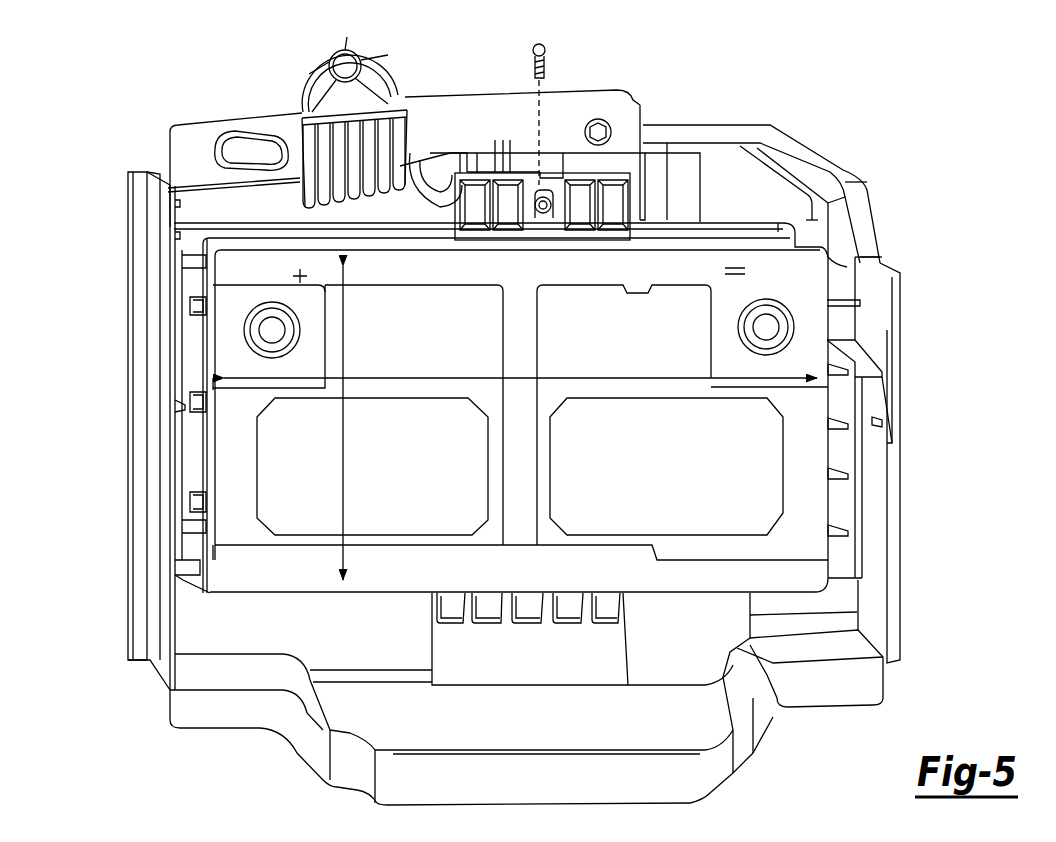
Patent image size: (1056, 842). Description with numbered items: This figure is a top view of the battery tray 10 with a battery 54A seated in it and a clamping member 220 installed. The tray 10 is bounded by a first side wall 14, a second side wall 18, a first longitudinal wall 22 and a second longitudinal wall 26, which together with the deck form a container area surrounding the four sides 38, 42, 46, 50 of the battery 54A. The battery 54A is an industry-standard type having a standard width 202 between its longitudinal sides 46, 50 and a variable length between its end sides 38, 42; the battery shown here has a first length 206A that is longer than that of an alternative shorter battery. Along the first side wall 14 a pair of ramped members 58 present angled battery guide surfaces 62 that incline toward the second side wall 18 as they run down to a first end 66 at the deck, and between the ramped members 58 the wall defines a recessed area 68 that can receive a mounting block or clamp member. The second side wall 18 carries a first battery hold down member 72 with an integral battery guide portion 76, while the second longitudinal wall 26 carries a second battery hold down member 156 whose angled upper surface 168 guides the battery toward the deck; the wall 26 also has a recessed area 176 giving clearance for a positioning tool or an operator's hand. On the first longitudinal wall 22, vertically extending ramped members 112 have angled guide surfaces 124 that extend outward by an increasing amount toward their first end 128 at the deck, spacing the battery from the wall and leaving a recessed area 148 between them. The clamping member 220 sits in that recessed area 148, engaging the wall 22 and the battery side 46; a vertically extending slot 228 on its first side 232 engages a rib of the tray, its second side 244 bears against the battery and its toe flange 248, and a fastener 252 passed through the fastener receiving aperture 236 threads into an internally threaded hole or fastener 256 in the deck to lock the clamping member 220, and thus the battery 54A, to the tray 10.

The battery tray 10 is at (872, 66).
The first side wall 14 is at (160, 192).
The second side wall 18 is at (860, 352).
The first longitudinal wall 22 is at (718, 155).
The second longitudinal wall 26 is at (740, 688).
The side of battery 38 is at (215, 462).
The side of battery 42 is at (828, 432).
The longitudinal side of battery 46 is at (521, 268).
The longitudinal side of battery 50 is at (405, 590).
The battery 54A is at (442, 366).
The ramped members 58 is at (176, 289).
The angled battery guide surface 62 is at (177, 250).
The first end 66 is at (200, 260).
The recessed area 68 is at (178, 420).
The first battery hold down member 72 is at (835, 332).
The battery guide portion 76 is at (845, 432).
The ramped members 112 is at (282, 203).
The angled battery guide surface 124 is at (256, 225).
The first end 128 is at (368, 258).
The recessed area 148 is at (597, 162).
The second battery hold down member 156 is at (630, 645).
The angled upper surface 168 is at (540, 672).
The recessed area 176 is at (395, 714).
The width 202 is at (347, 425).
The first length 206A is at (553, 375).
The clamping member 220 is at (640, 196).
The vertically extending slot 228 is at (570, 178).
The first side 232 is at (520, 172).
The fastener receiving aperture 236 is at (546, 214).
The second side 244 is at (481, 265).
The toe flange 248 is at (778, 232).
The fastener 252 is at (548, 62).
The internally threaded hole or fastener 256 is at (555, 208).